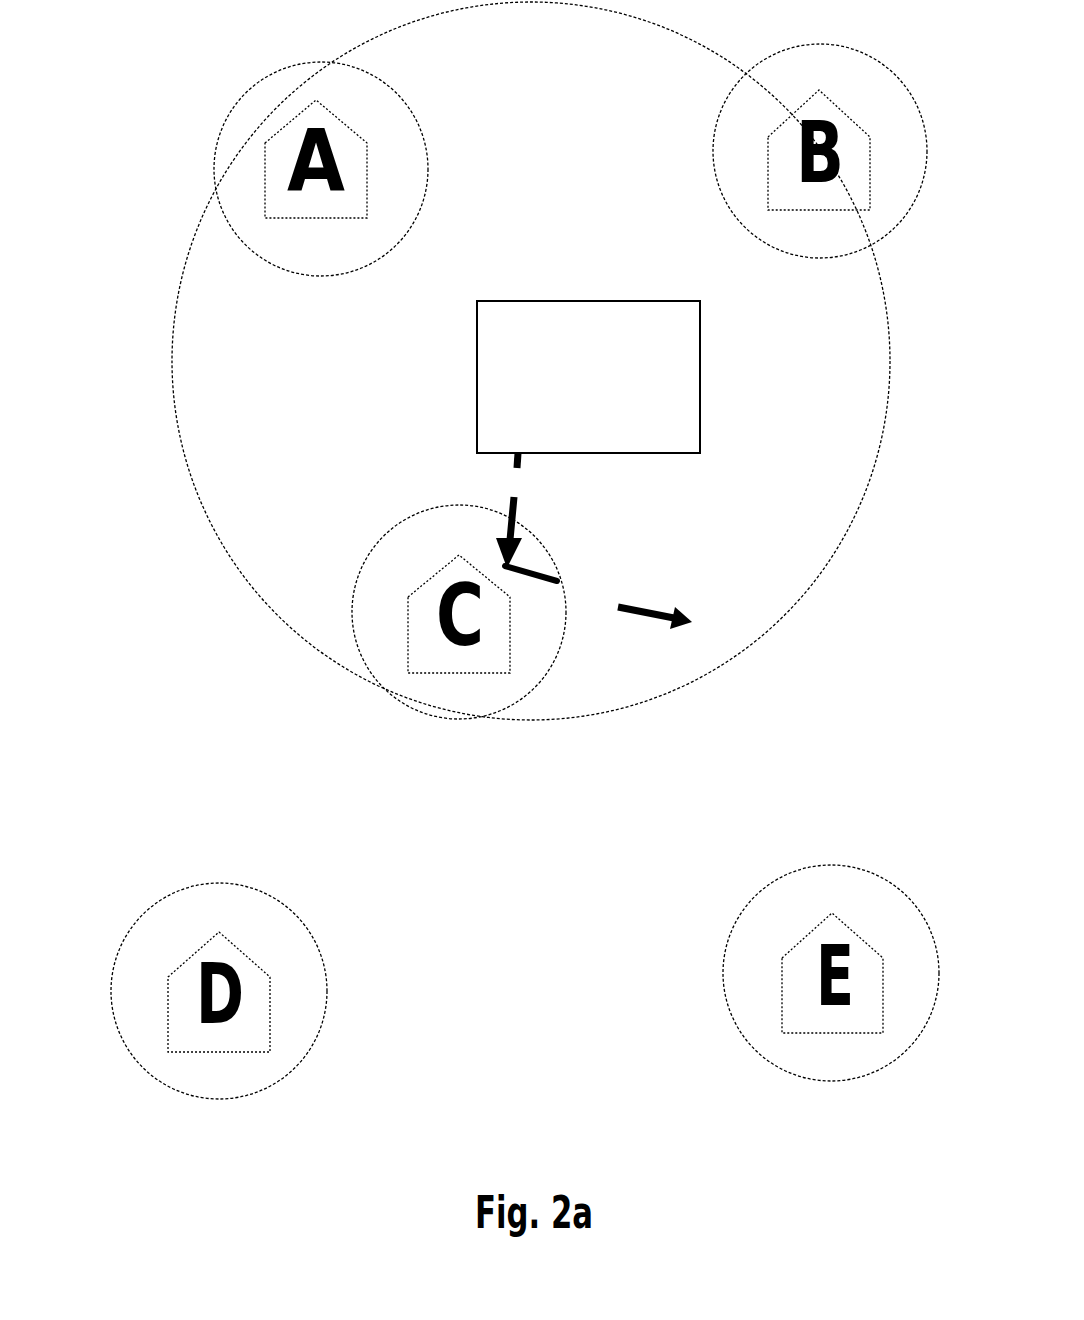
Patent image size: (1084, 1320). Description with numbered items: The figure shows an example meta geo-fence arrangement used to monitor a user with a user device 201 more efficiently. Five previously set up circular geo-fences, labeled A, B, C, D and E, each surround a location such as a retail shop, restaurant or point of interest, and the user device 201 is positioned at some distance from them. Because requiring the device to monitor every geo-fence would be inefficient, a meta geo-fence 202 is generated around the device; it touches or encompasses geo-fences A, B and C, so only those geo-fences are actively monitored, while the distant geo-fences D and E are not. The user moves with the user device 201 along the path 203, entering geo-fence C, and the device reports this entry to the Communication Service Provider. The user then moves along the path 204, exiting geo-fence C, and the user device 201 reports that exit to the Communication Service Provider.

The user with user device 201 is at (570, 436).
The meta geo-fence 202 is at (172, 433).
The path 203 is at (503, 464).
The path 204 is at (632, 616).